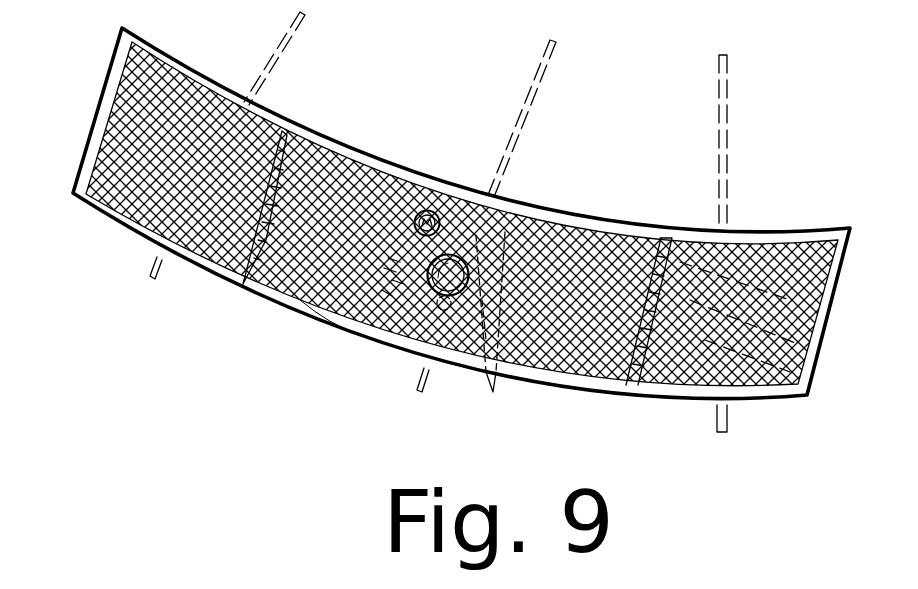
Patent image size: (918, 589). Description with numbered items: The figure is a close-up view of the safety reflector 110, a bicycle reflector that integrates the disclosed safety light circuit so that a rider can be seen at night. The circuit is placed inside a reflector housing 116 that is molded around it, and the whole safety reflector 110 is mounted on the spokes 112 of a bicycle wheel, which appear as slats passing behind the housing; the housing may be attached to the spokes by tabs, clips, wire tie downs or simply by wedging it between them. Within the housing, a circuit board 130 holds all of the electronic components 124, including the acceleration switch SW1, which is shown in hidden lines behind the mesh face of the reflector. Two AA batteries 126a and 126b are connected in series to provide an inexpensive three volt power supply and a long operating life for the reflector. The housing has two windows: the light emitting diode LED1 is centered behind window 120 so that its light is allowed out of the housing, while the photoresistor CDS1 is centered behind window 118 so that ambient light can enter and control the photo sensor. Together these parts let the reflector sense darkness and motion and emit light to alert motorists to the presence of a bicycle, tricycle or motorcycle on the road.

The safety reflector 110 is at (210, 313).
The spokes 112 is at (720, 80).
The reflector housing 116 is at (156, 54).
The window 118 is at (436, 209).
The window 120 is at (428, 262).
The electronic components 124 is at (493, 392).
The AA battery 126a is at (664, 392).
The AA battery 126b is at (828, 343).
The circuit board 130 is at (322, 330).
The photoresistor CDS1 is at (420, 214).
The acceleration switch SW1 is at (506, 198).
The light emitting diode LED1 is at (430, 293).